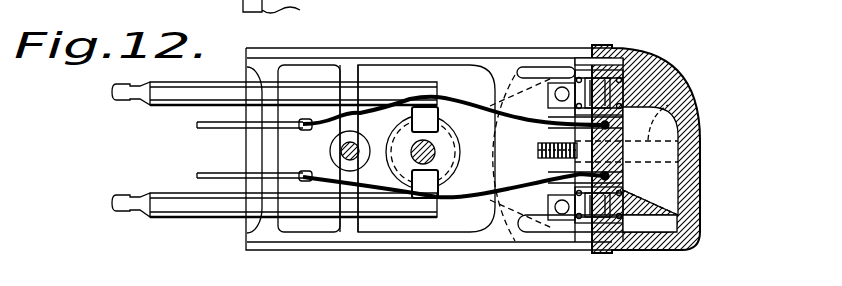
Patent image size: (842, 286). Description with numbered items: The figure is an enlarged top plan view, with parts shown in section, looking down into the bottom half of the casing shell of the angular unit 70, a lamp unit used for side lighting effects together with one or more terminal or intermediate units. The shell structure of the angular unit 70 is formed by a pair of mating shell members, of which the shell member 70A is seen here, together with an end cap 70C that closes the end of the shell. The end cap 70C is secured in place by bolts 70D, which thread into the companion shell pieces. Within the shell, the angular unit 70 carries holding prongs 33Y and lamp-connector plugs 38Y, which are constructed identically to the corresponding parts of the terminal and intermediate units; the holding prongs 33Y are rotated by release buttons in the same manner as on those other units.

The angular unit 70 is at (486, 12).
The shell member 70A is at (517, 52).
The end cap 70C is at (673, 102).
The bolts 70D is at (690, 118).
The holding prongs 33Y is at (160, 196).
The lamp-connector plugs 38Y is at (234, 174).